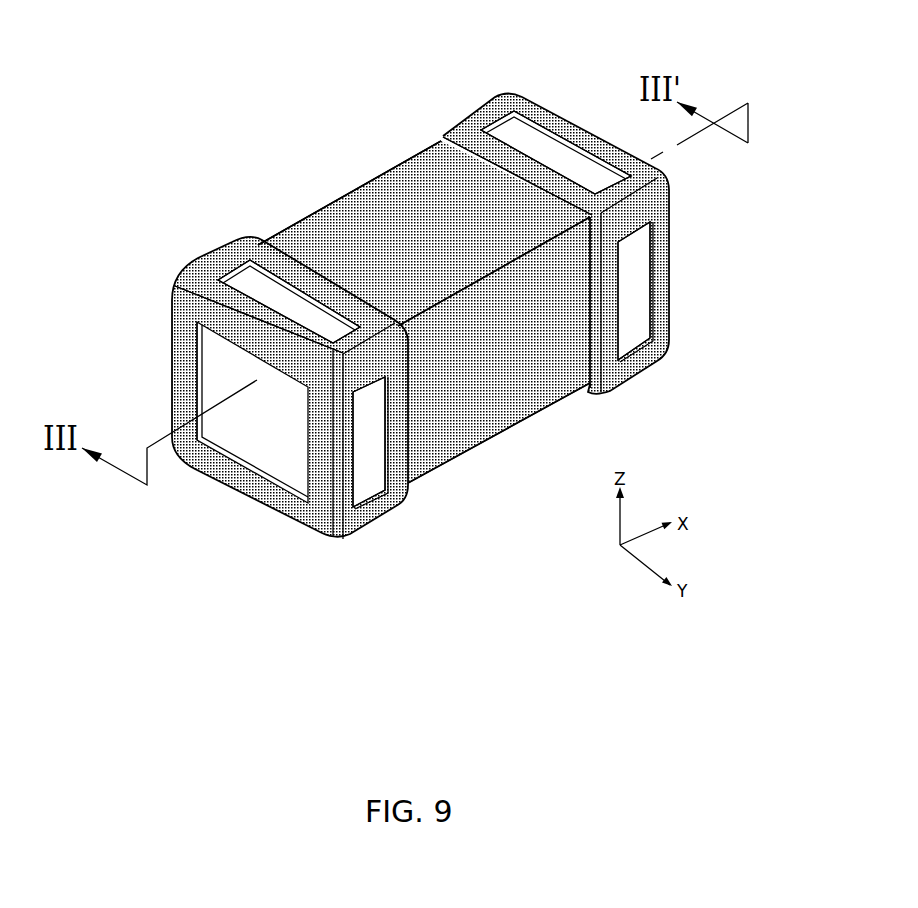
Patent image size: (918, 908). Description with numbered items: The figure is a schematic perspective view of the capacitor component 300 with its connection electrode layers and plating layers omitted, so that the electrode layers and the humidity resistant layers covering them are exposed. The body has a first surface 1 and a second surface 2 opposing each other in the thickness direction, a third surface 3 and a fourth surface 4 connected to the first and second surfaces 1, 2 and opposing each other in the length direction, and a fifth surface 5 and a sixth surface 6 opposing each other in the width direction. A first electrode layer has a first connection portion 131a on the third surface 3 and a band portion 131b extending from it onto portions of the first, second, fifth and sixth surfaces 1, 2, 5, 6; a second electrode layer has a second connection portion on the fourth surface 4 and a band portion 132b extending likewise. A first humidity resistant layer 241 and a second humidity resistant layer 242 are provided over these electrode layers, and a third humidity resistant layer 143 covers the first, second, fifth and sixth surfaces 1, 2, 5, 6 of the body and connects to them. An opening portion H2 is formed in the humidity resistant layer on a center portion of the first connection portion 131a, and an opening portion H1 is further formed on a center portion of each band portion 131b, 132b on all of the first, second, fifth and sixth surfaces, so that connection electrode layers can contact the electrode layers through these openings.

The capacitor component 300 is at (216, 89).
The first surface 1 is at (459, 407).
The second surface 2 is at (435, 200).
The third surface 3 is at (257, 443).
The fourth surface 4 is at (672, 259).
The fifth surface 5 is at (517, 377).
The sixth surface 6 is at (380, 222).
The first connection portion 131a is at (208, 362).
The band portion 131b is at (219, 272).
The band portion 132b is at (567, 157).
The third humidity resistant layer 143 is at (337, 225).
The first humidity resistant layer 241 is at (188, 268).
The second humidity resistant layer 242 is at (483, 130).
The opening portion H1 is at (527, 139).
The opening portion H2 is at (213, 354).